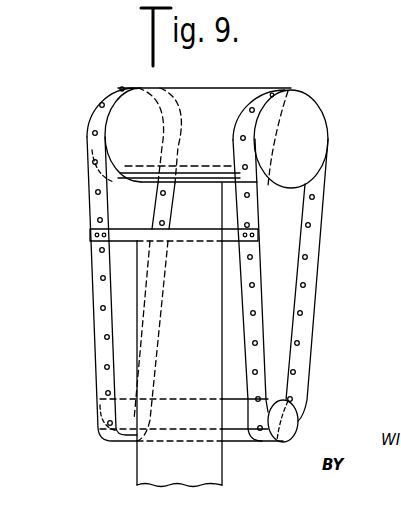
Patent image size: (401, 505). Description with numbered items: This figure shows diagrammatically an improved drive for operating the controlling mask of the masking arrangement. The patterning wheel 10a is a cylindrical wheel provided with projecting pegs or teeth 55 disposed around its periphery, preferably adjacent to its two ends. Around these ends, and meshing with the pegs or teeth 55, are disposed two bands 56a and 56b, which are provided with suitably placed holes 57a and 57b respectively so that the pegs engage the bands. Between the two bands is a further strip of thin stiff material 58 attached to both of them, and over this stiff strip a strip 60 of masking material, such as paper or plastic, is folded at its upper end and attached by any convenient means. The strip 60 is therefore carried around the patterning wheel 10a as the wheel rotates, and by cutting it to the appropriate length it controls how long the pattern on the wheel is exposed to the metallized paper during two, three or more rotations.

The patterning wheel 10a is at (223, 77).
The projecting pegs or teeth 55 is at (92, 130).
The band 56a is at (93, 262).
The band 56b is at (267, 207).
The holes 57a is at (103, 308).
The holes 57b is at (253, 316).
The strip of thin stiff material 58 is at (233, 226).
The strip of masking material 60 is at (219, 473).